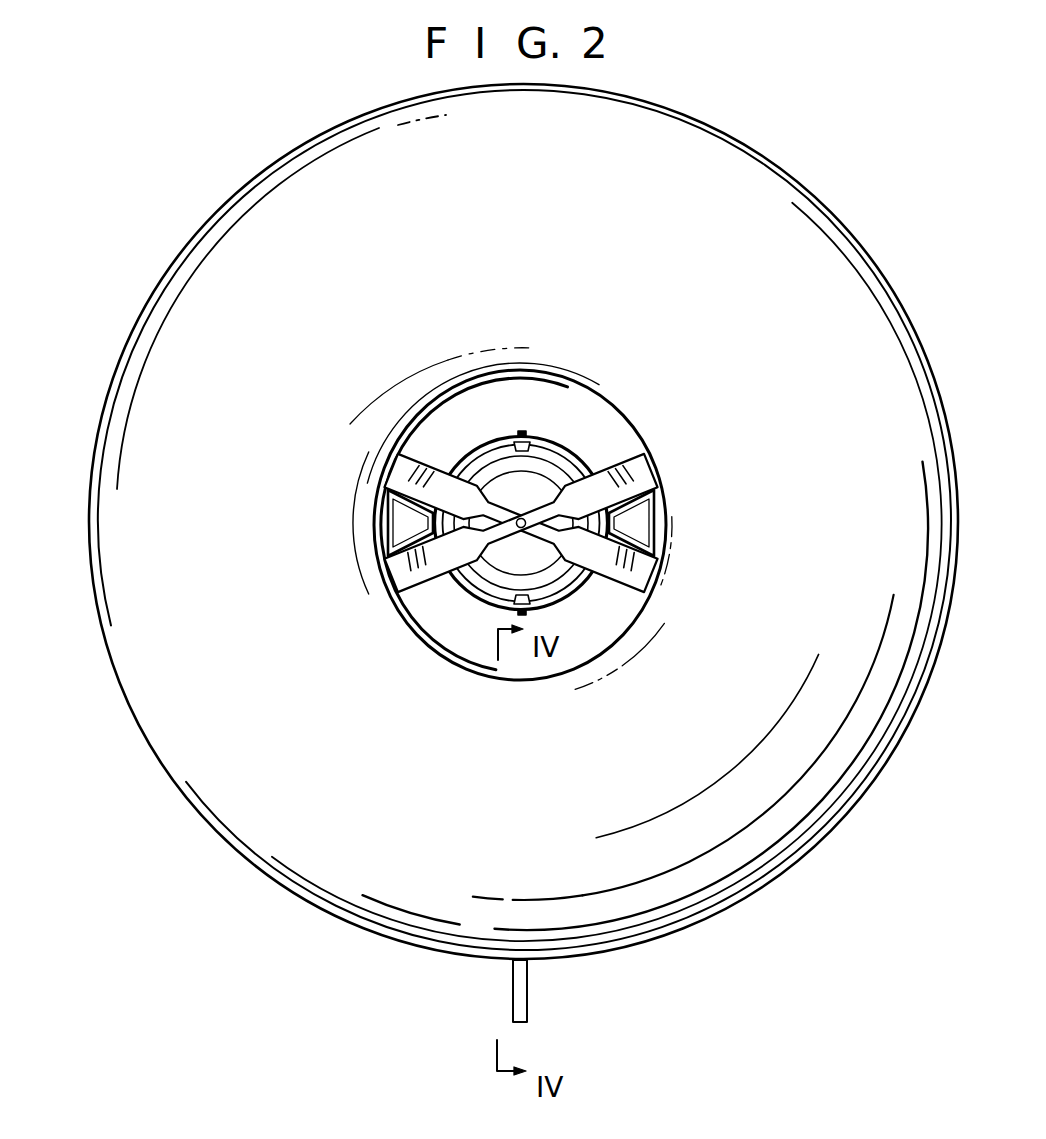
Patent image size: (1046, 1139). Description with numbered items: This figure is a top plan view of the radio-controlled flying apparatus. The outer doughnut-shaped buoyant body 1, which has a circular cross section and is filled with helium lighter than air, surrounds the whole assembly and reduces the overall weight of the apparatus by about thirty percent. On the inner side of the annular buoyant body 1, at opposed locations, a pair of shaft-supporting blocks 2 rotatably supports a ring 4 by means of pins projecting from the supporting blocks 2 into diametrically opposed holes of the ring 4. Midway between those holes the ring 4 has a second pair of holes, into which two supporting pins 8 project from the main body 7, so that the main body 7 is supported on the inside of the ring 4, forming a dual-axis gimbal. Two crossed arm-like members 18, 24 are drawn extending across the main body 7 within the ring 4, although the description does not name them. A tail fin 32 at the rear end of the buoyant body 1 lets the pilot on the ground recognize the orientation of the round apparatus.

The buoyant body 1 is at (805, 240).
The shaft-supporting block 2 is at (380, 532).
The ring 4 is at (487, 437).
The main body 7 is at (470, 590).
The supporting pin 8 is at (524, 432).
The arm 18 is at (622, 590).
The arm 24 is at (615, 470).
The tail fin 32 is at (514, 988).